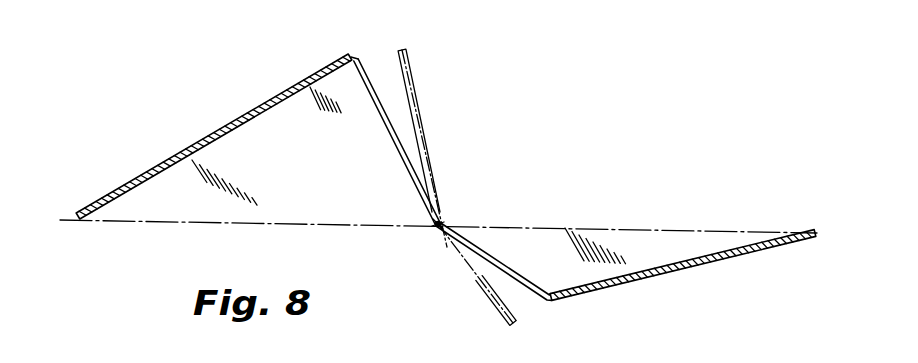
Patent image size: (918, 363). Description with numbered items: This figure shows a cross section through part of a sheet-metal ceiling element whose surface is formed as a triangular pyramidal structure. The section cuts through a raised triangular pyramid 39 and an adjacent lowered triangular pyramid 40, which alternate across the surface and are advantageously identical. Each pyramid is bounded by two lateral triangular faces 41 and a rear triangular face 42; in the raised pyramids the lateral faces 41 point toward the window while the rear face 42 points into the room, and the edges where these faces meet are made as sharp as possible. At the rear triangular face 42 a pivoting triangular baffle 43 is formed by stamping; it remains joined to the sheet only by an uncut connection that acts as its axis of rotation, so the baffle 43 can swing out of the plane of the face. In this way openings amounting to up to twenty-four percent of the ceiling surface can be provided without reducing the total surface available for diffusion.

The raised triangular pyramid 39 is at (236, 113).
The lowered triangular pyramid 40 is at (641, 291).
The lateral triangular face 41 is at (314, 180).
The rear triangular face 42 is at (384, 126).
The pivoting triangular baffle 43 is at (412, 108).